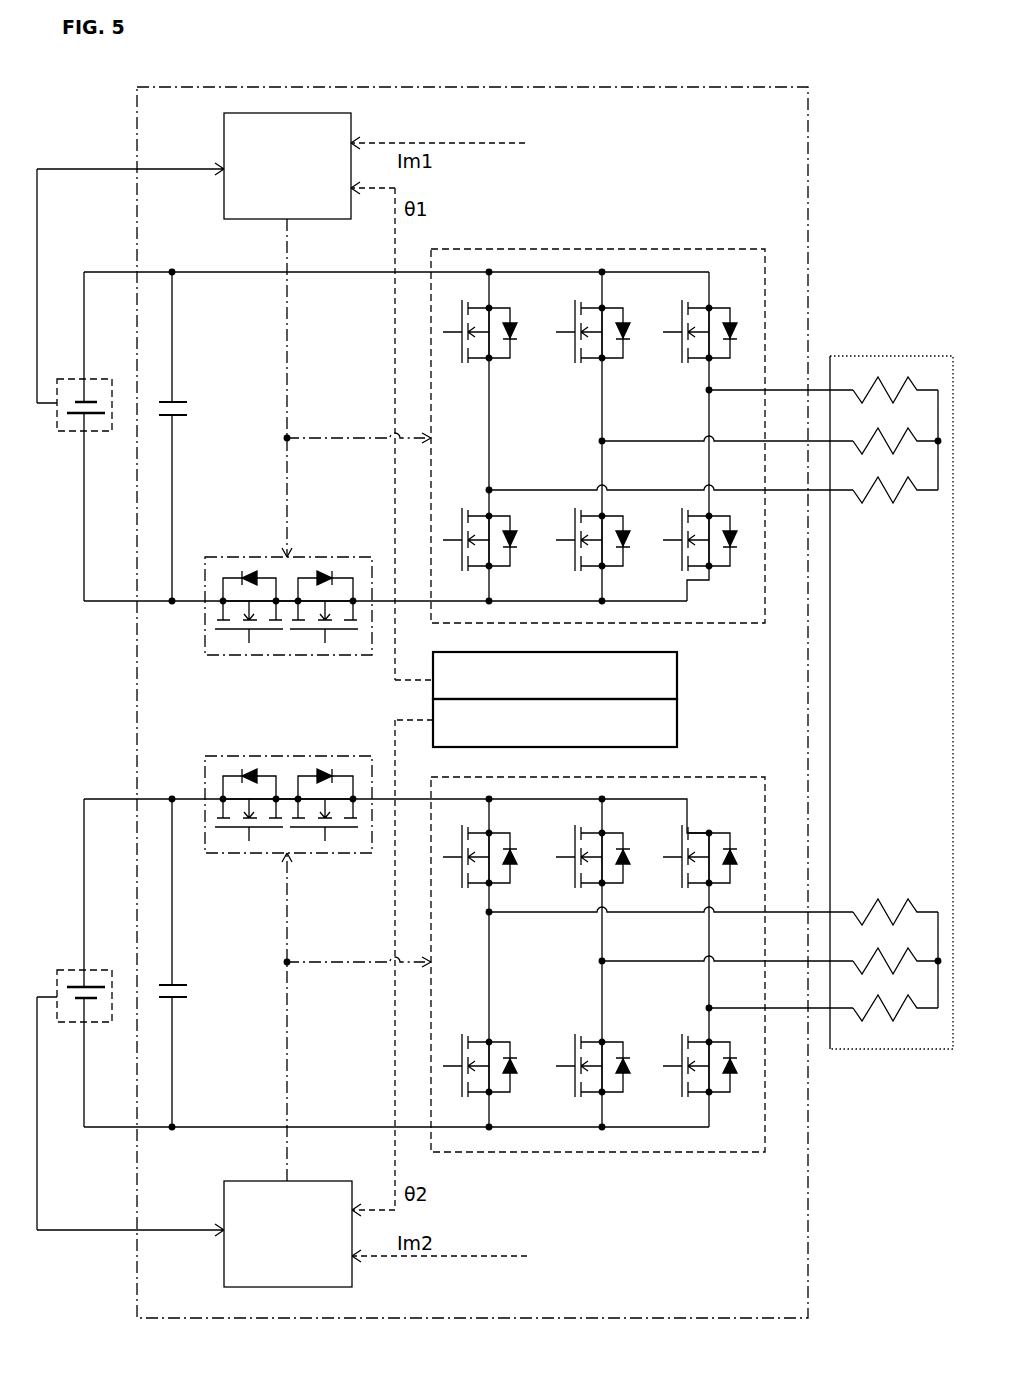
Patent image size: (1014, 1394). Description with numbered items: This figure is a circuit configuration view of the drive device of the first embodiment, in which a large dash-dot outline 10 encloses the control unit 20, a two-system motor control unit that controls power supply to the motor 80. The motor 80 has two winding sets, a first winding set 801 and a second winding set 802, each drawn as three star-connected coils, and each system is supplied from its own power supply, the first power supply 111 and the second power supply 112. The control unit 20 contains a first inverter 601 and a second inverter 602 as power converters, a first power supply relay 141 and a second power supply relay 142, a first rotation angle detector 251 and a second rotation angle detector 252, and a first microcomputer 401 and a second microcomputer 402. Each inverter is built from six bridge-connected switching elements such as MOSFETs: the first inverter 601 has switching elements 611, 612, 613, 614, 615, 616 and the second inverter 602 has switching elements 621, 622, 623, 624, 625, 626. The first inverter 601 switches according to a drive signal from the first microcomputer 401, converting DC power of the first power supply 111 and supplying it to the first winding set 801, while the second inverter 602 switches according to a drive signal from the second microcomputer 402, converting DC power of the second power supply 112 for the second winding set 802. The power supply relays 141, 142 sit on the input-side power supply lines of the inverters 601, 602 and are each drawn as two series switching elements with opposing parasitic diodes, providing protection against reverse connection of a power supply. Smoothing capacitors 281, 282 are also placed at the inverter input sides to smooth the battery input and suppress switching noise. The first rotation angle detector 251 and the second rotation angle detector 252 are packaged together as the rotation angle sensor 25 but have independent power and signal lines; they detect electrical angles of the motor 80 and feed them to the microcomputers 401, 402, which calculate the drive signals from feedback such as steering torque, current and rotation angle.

The ECU 10 is at (812, 148).
The control unit 20 is at (592, 187).
The rotation angle sensor 25 is at (604, 699).
The first rotation angle detector 251 is at (680, 677).
The second rotation angle detector 252 is at (585, 723).
The motor 80 is at (891, 673).
The first winding set 801 is at (888, 530).
The second winding set 802 is at (888, 874).
The first power supply 111 is at (93, 433).
The second power supply 112 is at (90, 970).
The first power supply relay 141 is at (262, 557).
The second power supply relay 142 is at (275, 756).
The first smoothing capacitor 281 is at (180, 416).
The second smoothing capacitor 282 is at (180, 985).
The first microcomputer 401 is at (224, 210).
The second microcomputer 402 is at (224, 1191).
The first inverter 601 is at (642, 421).
The second inverter 602 is at (642, 951).
The switching element 611 is at (500, 568).
The switching element 612 is at (613, 568).
The switching element 613 is at (722, 570).
The switching element 614 is at (500, 362).
The switching element 615 is at (607, 362).
The switching element 616 is at (703, 362).
The switching element 621 is at (505, 832).
The switching element 622 is at (620, 832).
The switching element 623 is at (708, 832).
The switching element 624 is at (500, 1040).
The switching element 625 is at (615, 1040).
The switching element 626 is at (702, 1040).